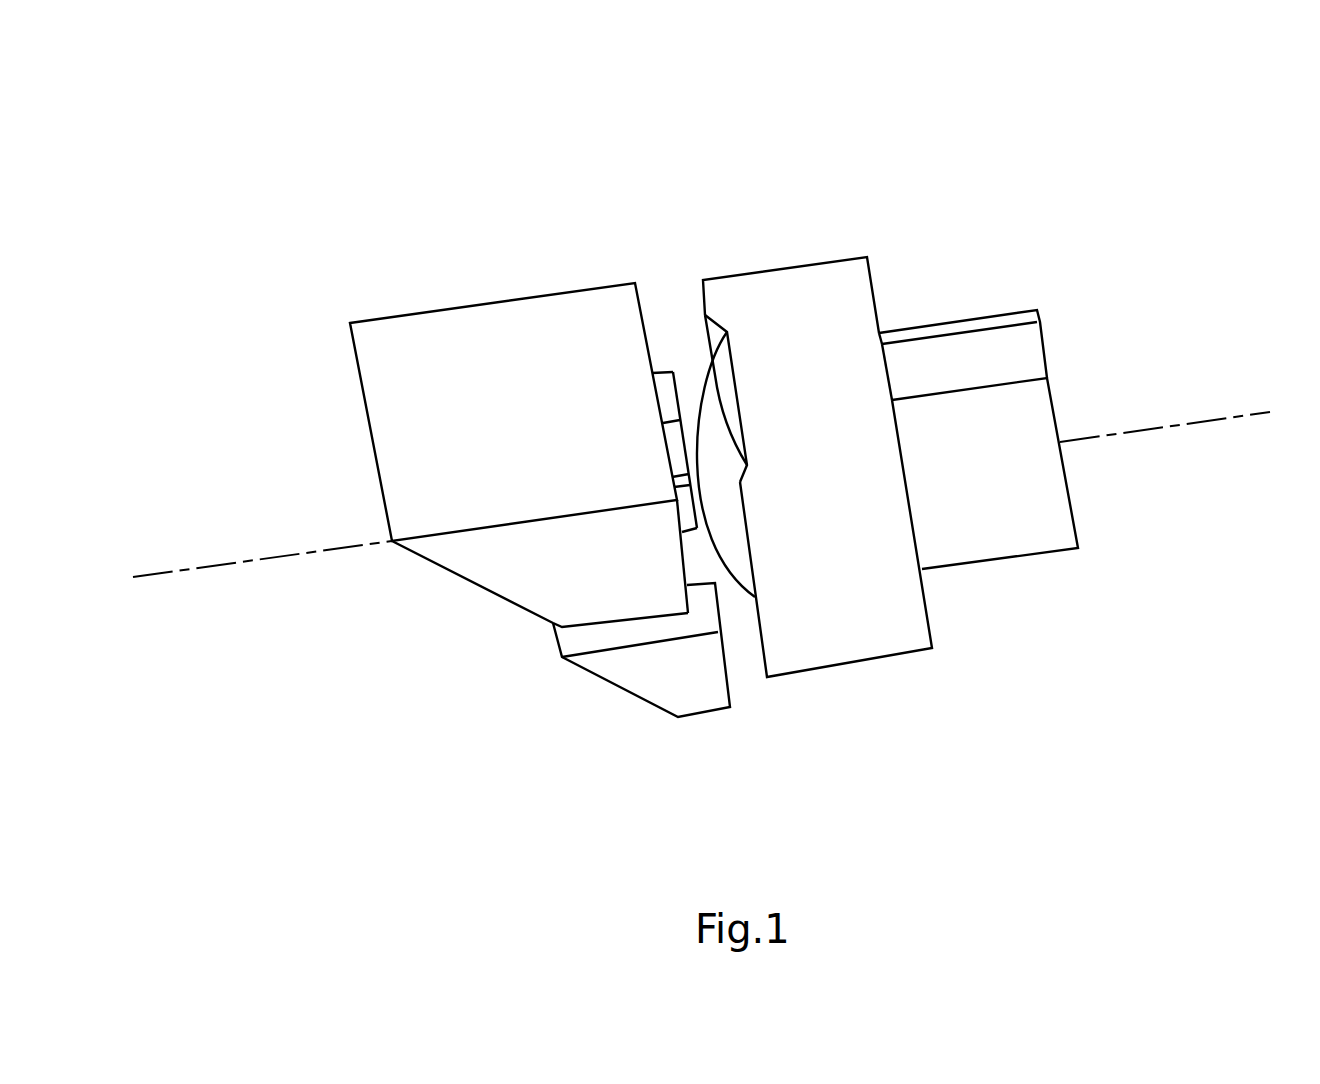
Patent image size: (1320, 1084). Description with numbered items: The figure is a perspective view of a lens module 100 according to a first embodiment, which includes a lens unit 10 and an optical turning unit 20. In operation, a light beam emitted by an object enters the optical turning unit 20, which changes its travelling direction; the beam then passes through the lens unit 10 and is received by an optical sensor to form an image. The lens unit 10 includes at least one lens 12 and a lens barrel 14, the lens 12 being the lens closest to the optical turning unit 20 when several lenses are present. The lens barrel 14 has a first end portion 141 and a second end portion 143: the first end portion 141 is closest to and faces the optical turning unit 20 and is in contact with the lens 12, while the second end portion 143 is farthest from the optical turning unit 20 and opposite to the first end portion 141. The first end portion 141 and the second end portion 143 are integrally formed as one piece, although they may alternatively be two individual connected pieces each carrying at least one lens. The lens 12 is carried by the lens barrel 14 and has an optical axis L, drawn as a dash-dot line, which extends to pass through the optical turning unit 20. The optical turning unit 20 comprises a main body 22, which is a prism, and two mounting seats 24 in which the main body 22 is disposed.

The lens module 100 is at (288, 88).
The lens unit 10 is at (1020, 165).
The lens 12 is at (712, 445).
The lens barrel 14 is at (973, 360).
The first end portion 141 is at (858, 627).
The second end portion 143 is at (1022, 535).
The optical turning unit 20 is at (690, 195).
The main body 22 is at (490, 415).
The mounting seats 24 is at (660, 388).
The optical axis L is at (1162, 427).